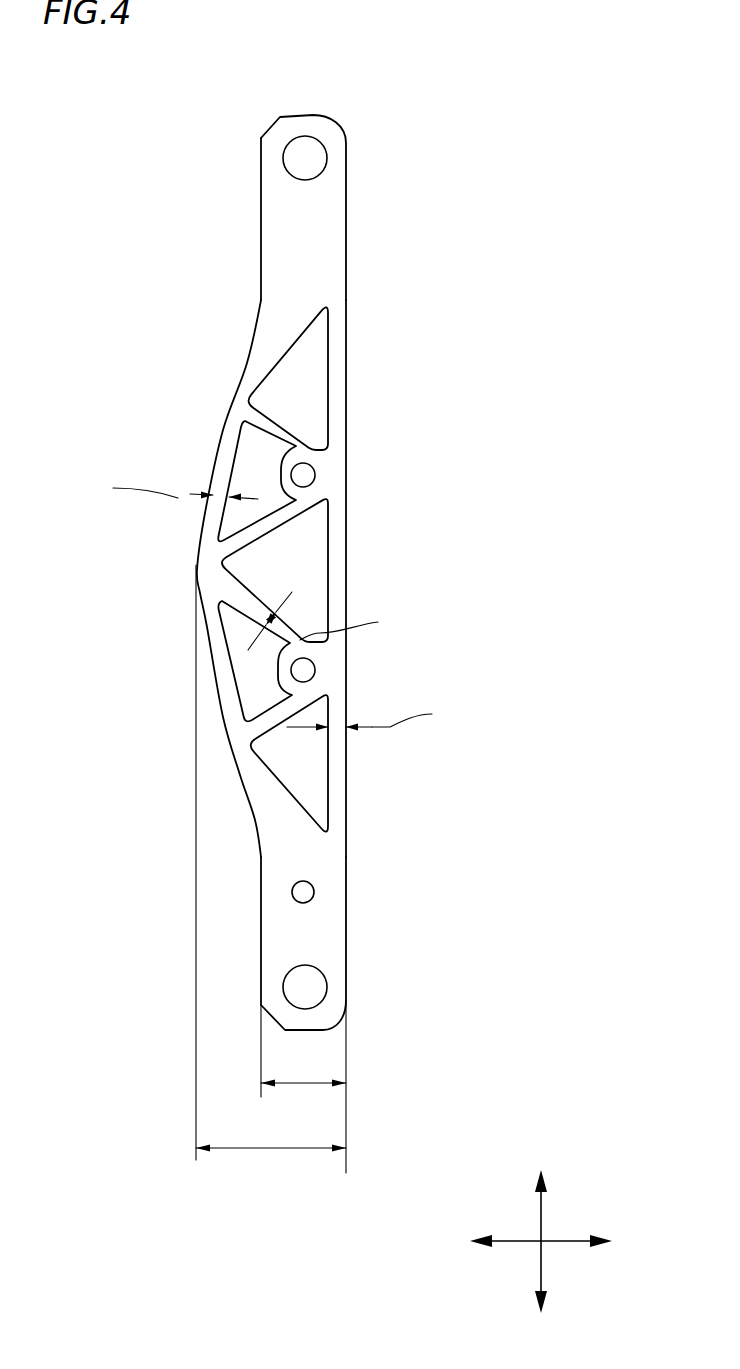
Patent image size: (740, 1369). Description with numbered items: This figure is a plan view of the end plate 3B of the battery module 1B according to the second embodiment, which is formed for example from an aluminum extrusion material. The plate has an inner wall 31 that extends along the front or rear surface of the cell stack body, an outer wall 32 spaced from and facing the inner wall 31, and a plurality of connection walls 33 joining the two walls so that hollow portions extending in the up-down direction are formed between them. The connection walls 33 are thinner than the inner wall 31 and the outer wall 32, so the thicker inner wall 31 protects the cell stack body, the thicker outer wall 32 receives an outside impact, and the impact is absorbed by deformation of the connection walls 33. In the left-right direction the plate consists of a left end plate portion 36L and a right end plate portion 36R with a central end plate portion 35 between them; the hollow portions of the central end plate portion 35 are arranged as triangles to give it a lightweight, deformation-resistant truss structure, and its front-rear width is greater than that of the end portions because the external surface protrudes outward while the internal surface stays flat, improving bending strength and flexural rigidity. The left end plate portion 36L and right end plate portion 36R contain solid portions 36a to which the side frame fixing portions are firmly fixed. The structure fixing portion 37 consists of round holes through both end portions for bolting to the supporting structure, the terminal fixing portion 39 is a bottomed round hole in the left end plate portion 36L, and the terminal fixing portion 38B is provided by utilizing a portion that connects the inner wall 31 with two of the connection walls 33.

The battery module 1B is at (476, 148).
The end plate 3B is at (343, 694).
The inner wall 31 is at (346, 560).
The outer wall 32 is at (213, 478).
The connection walls 33 is at (272, 512).
The central end plate portion 35 is at (197, 575).
The right end plate portion 36R is at (262, 218).
The left end plate portion 36L is at (262, 916).
The solid portions 36a is at (307, 218).
The structure fixing portion 37 is at (307, 147).
The terminal fixing portion 38B is at (317, 475).
The terminal fixing portion 39 is at (317, 890).